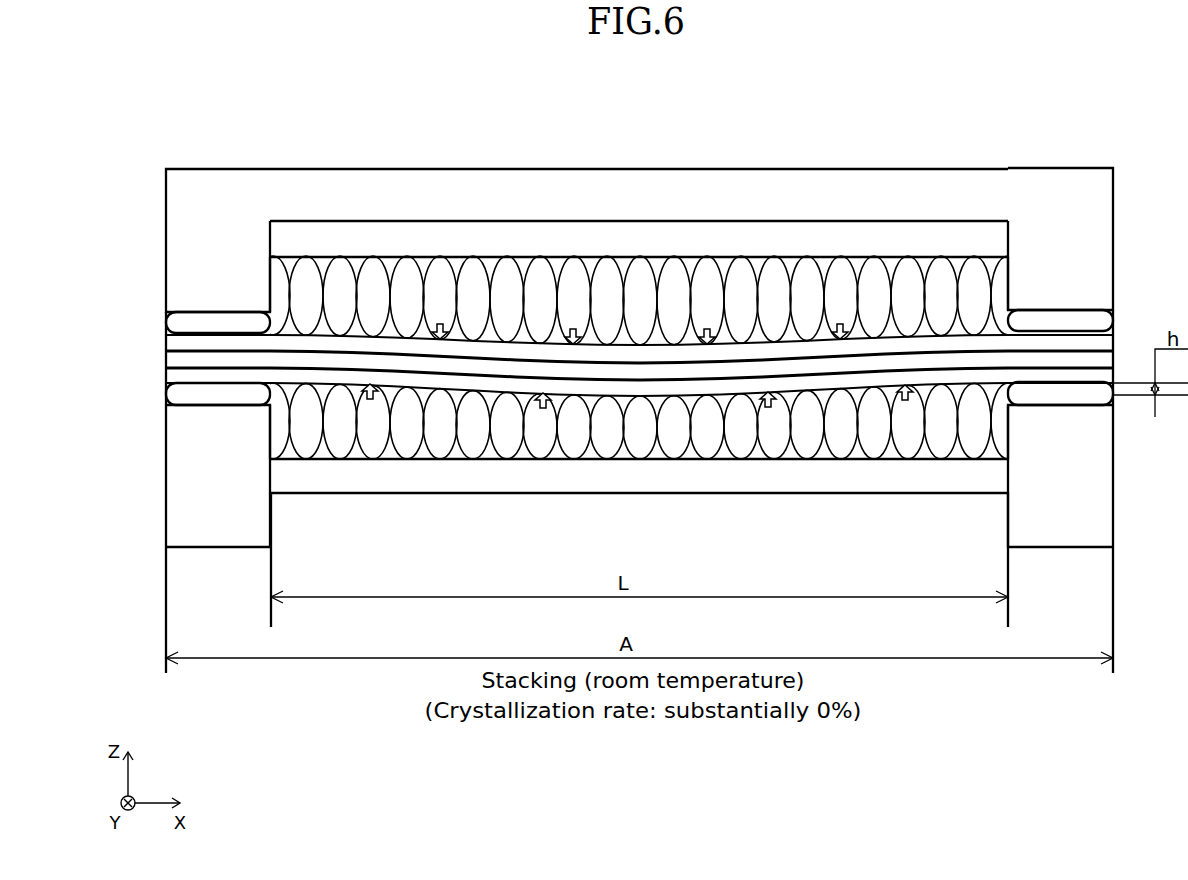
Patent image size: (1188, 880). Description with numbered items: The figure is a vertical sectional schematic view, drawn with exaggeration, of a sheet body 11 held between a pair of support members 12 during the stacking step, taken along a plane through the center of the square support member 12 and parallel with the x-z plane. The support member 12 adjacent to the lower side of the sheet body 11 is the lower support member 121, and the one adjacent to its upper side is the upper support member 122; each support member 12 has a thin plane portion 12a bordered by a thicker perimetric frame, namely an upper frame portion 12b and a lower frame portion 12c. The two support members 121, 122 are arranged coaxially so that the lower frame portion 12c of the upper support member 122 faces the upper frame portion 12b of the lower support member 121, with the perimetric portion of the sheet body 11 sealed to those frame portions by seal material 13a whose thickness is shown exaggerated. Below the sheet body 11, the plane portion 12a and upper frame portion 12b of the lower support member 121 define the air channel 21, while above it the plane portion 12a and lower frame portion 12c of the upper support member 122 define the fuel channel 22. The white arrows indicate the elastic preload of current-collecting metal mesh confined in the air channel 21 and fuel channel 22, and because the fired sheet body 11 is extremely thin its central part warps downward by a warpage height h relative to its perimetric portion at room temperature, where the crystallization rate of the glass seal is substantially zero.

The sheet body 11 is at (675, 327).
The support member 12 is at (639, 385).
The lower support member 121 is at (557, 497).
The upper support member 122 is at (713, 207).
The plane portion 12a is at (569, 262).
The upper frame portion 12b is at (274, 433).
The lower frame portion 12c is at (274, 285).
The spacer 13a is at (254, 398).
The air channel 21 is at (386, 433).
The fuel channel 22 is at (389, 304).